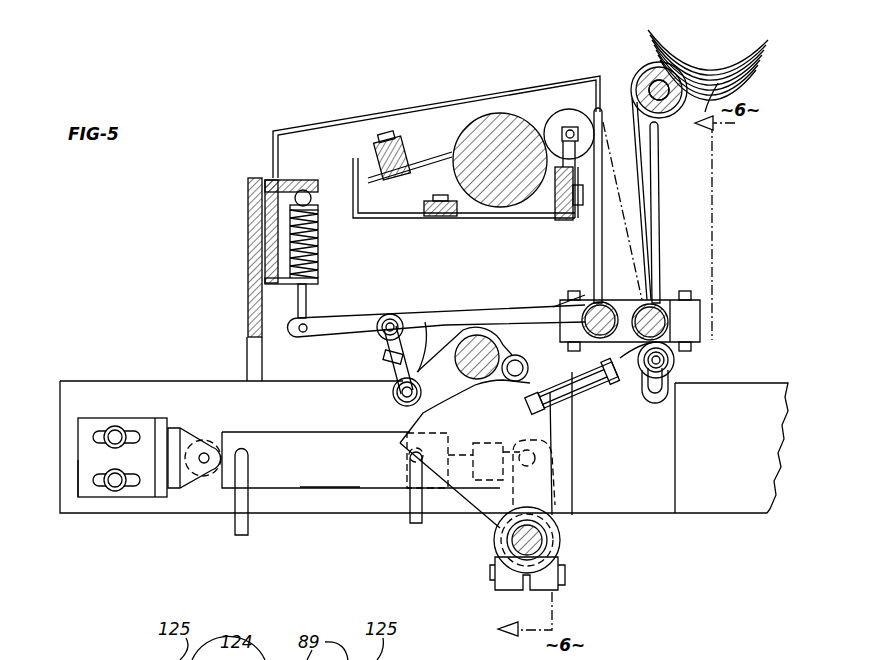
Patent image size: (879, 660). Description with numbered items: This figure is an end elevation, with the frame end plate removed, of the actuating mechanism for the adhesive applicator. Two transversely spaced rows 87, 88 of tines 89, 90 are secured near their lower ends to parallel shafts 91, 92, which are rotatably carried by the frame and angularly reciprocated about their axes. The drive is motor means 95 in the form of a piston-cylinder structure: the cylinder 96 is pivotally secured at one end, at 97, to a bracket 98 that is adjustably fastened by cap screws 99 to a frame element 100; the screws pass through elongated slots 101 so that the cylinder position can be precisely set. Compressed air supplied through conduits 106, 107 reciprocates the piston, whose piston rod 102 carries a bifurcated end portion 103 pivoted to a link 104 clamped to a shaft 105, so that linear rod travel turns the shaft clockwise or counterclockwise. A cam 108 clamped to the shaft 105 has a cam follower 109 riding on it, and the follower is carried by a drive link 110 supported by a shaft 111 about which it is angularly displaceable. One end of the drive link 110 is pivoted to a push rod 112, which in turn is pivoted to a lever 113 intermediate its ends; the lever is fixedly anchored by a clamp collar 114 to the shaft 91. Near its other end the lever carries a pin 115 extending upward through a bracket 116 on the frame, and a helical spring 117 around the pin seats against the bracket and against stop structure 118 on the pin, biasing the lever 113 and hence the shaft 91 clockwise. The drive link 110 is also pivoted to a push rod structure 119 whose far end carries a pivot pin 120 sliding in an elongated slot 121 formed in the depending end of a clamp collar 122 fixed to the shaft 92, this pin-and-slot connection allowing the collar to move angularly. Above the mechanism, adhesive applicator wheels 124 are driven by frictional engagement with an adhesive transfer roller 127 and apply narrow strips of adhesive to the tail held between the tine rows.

The first row of tines 87 is at (594, 263).
The second row of tines 88 is at (658, 252).
The tines 89 is at (597, 243).
The tines 90 is at (657, 210).
The shaft 91 is at (598, 305).
The shaft 92 is at (653, 310).
The motor means 95 is at (340, 484).
The cylinder 96 is at (372, 484).
The pivotal connection 97 is at (201, 472).
The bracket 98 is at (147, 492).
The cap screws 99 is at (113, 494).
The frame element 100 is at (115, 385).
The elongated slots 101 is at (96, 478).
The piston rod 102 is at (465, 466).
The bifurcated end portion 103 is at (522, 440).
The link 104 is at (545, 495).
The shaft 105 is at (538, 545).
The conduit 106 is at (247, 532).
The conduit 107 is at (417, 522).
The cam 108 is at (423, 421).
The cam follower 109 is at (512, 353).
The drive link 110 is at (422, 368).
The shaft 111 is at (470, 345).
The push rod 112 is at (392, 365).
The lever 113 is at (345, 326).
The clamp collar 114 is at (553, 308).
The pin 115 is at (296, 310).
The bracket 116 is at (264, 250).
The helical spring 117 is at (283, 232).
The stop structure 118 is at (310, 198).
The push rod structure 119 is at (596, 390).
The pivot pin 120 is at (663, 360).
The elongated slot 121 is at (664, 380).
The clamp collar 122 is at (694, 332).
The adhesive applicator wheels 124 is at (558, 98).
The adhesive transfer roller 127 is at (486, 122).